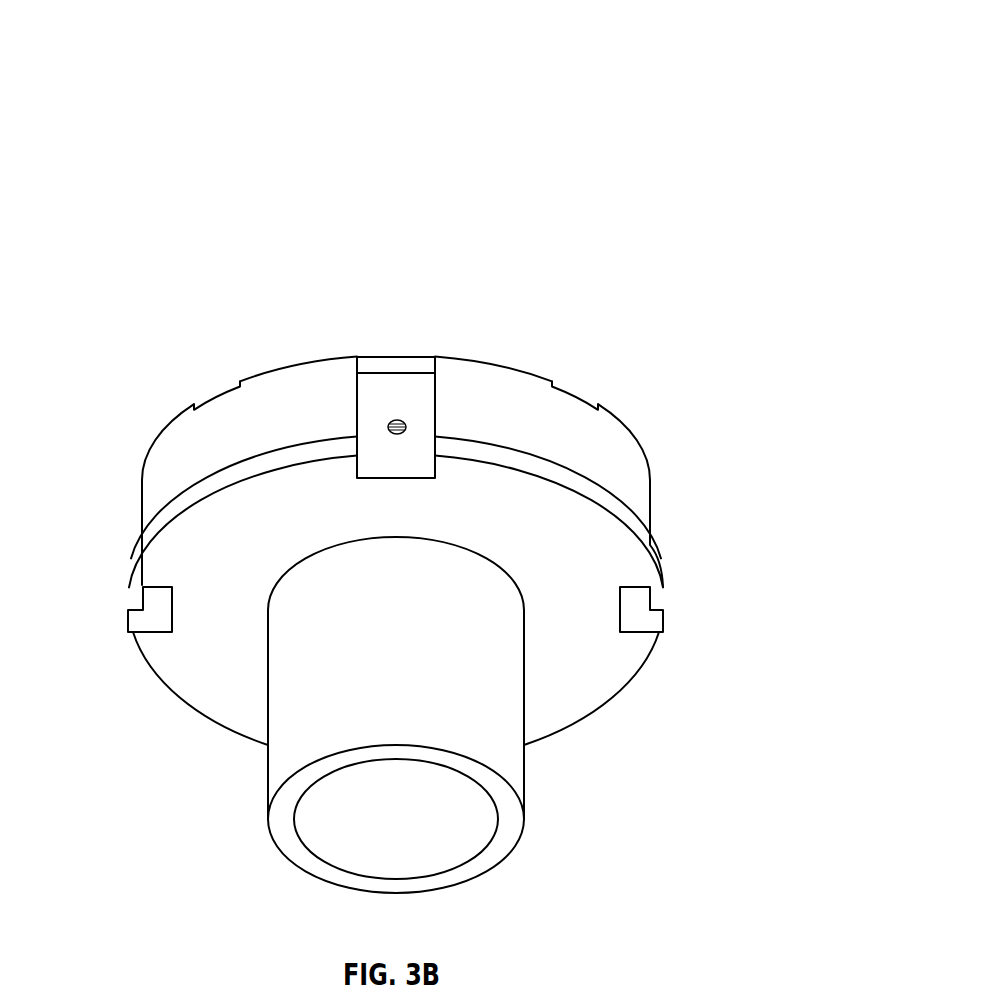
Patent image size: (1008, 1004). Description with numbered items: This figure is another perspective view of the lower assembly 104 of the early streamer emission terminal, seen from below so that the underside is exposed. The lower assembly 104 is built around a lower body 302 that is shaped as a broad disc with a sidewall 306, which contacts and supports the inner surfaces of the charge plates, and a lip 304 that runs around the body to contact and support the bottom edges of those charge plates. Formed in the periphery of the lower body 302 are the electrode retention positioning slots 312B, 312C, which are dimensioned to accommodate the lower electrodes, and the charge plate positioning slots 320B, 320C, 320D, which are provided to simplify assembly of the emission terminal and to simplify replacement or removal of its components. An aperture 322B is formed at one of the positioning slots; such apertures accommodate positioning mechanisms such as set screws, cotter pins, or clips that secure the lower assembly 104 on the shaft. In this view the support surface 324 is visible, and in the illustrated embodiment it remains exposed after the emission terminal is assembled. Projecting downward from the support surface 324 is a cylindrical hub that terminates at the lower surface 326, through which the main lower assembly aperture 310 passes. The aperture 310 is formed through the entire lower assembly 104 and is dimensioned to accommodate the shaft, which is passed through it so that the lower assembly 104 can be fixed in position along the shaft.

The lower assembly 104 is at (556, 138).
The lower body 302 is at (503, 748).
The lip 304 is at (662, 558).
The sidewall 306 is at (620, 483).
The main lower assembly aperture 310 is at (326, 834).
The electrode retention positioning slot 312B is at (586, 385).
The electrode retention positioning slot 312C is at (207, 394).
The charge plate positioning slot 320B is at (664, 596).
The charge plate positioning slot 320C is at (425, 356).
The charge plate positioning slot 320D is at (131, 598).
The aperture 322B is at (397, 406).
The support surface 324 is at (612, 658).
The lower surface 326 is at (493, 848).